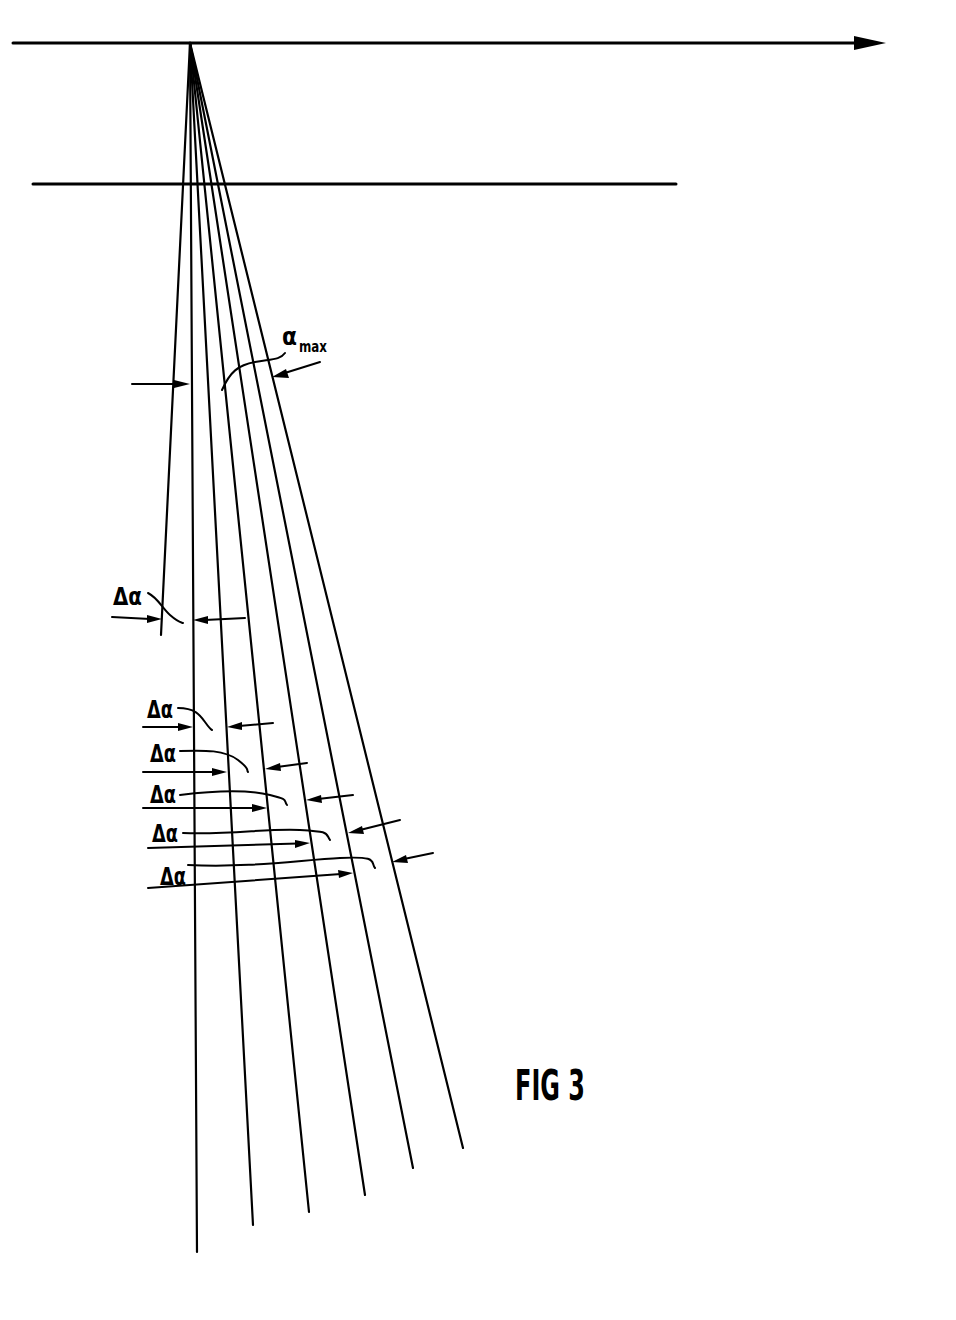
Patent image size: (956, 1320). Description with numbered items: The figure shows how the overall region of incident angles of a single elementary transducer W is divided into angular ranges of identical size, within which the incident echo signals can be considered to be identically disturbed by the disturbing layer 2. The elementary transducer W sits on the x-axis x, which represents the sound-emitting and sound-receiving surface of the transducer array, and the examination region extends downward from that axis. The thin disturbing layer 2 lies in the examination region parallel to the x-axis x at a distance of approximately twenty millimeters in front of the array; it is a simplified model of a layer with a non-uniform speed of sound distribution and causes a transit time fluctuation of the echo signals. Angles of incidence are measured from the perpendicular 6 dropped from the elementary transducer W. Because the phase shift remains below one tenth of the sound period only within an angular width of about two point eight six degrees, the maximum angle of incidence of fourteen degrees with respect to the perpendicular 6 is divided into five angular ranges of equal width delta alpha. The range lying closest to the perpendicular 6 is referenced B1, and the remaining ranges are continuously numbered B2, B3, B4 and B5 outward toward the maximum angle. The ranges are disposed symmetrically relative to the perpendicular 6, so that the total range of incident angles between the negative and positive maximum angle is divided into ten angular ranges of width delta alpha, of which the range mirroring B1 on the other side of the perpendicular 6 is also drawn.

The disturbing layer 2 is at (605, 185).
The perpendicular 6 is at (190, 455).
The elementary transducer W is at (196, 26).
The x-axis x is at (449, 60).
The angular range B1 is at (222, 923).
The angular range B2 is at (265, 972).
The angular range B3 is at (313, 1007).
The angular range B4 is at (365, 1043).
The angular range B5 is at (410, 1073).